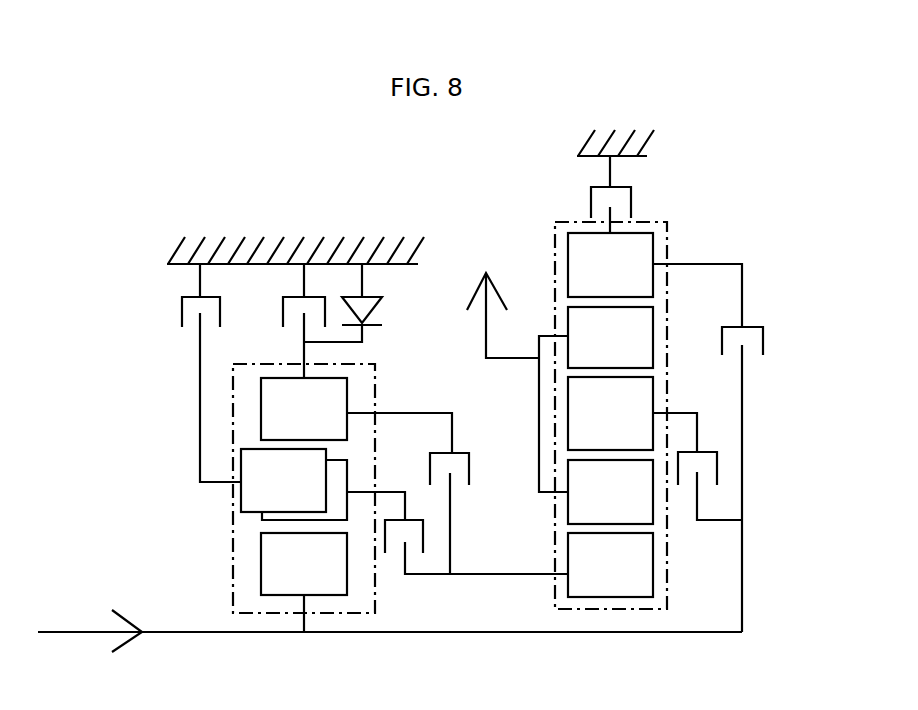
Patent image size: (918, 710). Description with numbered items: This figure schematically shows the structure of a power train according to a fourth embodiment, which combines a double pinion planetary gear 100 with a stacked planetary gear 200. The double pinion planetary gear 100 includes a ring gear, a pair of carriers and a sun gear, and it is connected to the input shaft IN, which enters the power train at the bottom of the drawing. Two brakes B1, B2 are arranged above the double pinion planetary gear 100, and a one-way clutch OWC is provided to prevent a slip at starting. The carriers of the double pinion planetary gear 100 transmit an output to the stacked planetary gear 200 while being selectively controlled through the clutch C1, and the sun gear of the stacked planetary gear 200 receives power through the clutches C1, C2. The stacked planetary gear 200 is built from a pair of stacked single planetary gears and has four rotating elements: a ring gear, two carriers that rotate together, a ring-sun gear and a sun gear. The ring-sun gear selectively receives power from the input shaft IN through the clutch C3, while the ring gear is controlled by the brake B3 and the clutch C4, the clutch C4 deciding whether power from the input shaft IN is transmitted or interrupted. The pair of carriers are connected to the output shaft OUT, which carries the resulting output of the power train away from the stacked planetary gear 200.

The double pinion planetary gear 100 is at (233, 546).
The stacked planetary gear 200 is at (667, 222).
The brake B1 is at (201, 373).
The brake B2 is at (295, 321).
The brake B3 is at (636, 194).
The clutch C1 is at (457, 533).
The clutch C2 is at (408, 477).
The clutch C3 is at (717, 468).
The clutch C4 is at (736, 448).
The one-way clutch OWC is at (380, 303).
The input shaft IN is at (390, 624).
The output shaft OUT is at (511, 368).